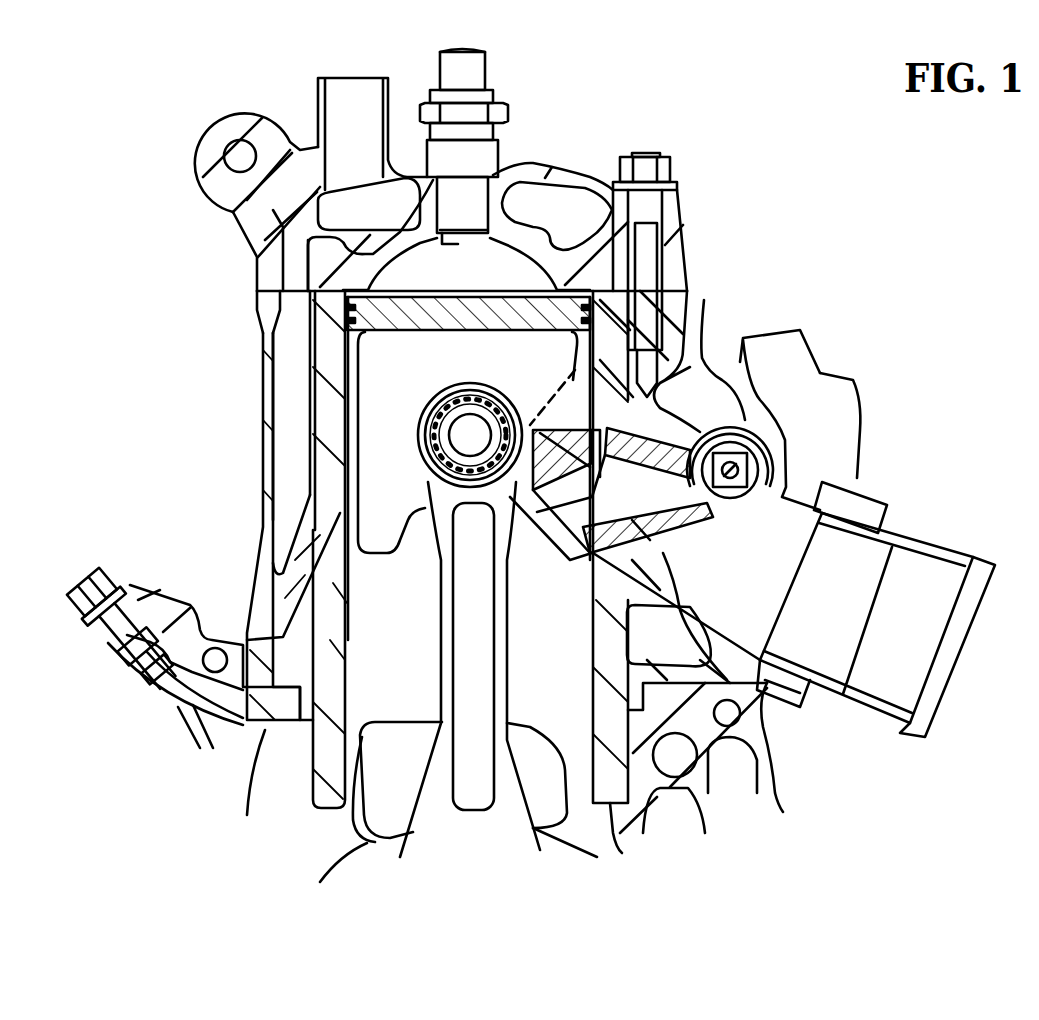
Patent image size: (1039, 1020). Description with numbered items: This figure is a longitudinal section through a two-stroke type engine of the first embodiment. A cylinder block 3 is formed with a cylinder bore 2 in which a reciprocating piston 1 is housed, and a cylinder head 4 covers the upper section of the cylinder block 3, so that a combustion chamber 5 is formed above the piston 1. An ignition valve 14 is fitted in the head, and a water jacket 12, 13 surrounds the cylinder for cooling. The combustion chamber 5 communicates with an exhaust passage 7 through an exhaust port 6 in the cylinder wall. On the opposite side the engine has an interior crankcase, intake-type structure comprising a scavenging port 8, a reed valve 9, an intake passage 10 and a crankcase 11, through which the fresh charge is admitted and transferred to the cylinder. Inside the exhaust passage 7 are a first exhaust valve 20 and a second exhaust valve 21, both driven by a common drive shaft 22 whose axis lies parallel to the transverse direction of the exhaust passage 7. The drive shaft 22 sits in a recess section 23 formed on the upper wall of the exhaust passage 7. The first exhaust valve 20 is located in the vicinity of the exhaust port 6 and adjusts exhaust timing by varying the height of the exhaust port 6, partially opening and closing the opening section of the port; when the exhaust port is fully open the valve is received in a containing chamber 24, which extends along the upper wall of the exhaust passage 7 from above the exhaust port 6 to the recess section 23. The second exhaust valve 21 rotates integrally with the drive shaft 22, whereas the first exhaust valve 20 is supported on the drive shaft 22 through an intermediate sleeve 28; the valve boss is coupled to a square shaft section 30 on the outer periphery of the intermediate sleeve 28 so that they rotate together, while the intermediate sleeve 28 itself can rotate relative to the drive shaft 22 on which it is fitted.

The piston 1 is at (432, 320).
The cylinder bore 2 is at (340, 428).
The cylinder block 3 is at (262, 350).
The cylinder head 4 is at (244, 214).
The combustion chamber 5 is at (474, 277).
The exhaust port 6 is at (533, 525).
The exhaust passage 7 is at (749, 551).
The scavenging port 8 is at (270, 565).
The reed valve 9 is at (173, 725).
The intake passage 10 is at (226, 798).
The crankcase 11 is at (167, 598).
The water jacket 12 is at (280, 386).
The water jacket 13 is at (281, 268).
The ignition valve 14 is at (492, 155).
The first exhaust valve 20 is at (623, 472).
The second exhaust valve 21 is at (652, 553).
The drive shaft 22 is at (787, 447).
The recess section 23 is at (785, 402).
The containing chamber 24 is at (704, 300).
The intermediate sleeve 28 is at (828, 453).
The square shaft section 30 is at (766, 463).